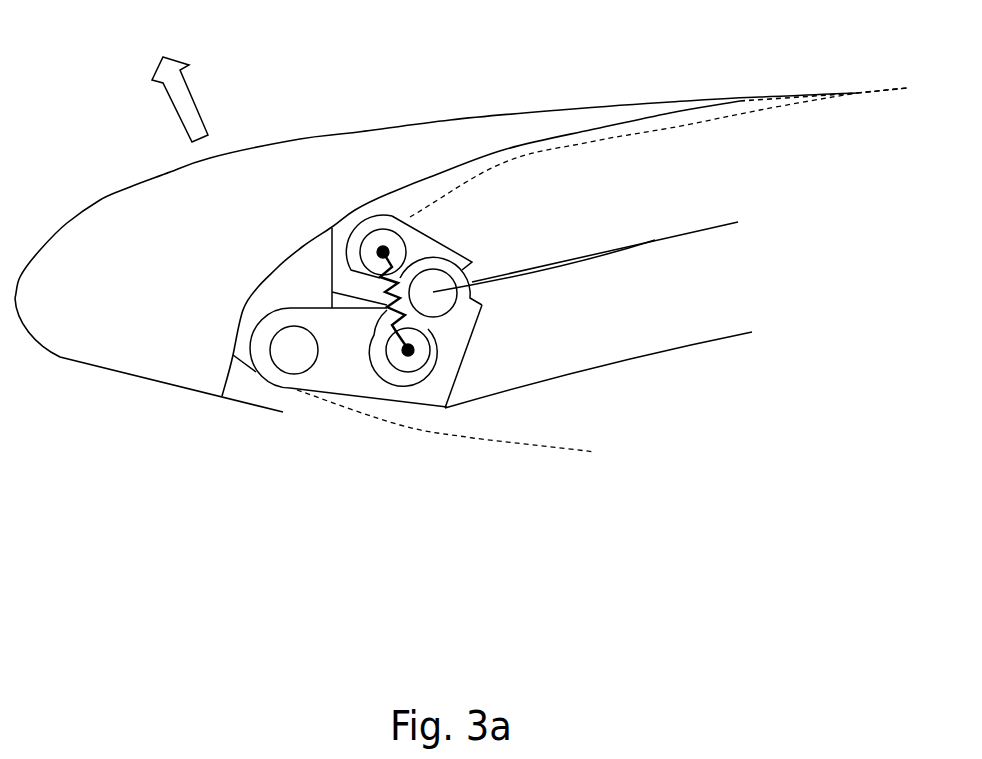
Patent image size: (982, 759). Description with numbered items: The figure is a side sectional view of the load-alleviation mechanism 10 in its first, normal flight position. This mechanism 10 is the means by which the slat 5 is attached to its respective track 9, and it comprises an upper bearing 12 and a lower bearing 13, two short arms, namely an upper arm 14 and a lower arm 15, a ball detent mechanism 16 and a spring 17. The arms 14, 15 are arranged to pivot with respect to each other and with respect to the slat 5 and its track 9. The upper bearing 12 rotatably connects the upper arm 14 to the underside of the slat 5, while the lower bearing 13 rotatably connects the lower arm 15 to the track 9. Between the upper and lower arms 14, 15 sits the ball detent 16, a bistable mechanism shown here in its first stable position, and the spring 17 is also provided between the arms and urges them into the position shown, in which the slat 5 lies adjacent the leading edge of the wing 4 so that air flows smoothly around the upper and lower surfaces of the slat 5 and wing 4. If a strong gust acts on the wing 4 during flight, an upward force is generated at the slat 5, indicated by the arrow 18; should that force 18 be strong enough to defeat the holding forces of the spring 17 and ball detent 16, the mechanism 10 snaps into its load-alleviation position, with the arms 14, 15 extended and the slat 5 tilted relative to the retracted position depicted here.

The wing 4 is at (573, 453).
The slat 5 is at (63, 357).
The track 9 is at (735, 273).
The load-alleviation mechanism 10 is at (483, 224).
The upper bearing 12 is at (372, 240).
The lower bearing 13 is at (402, 363).
The upper arm 14 is at (420, 245).
The lower arm 15 is at (447, 328).
The ball detent mechanism 16 is at (472, 282).
The spring 17 is at (392, 310).
The arrow 18 is at (176, 104).